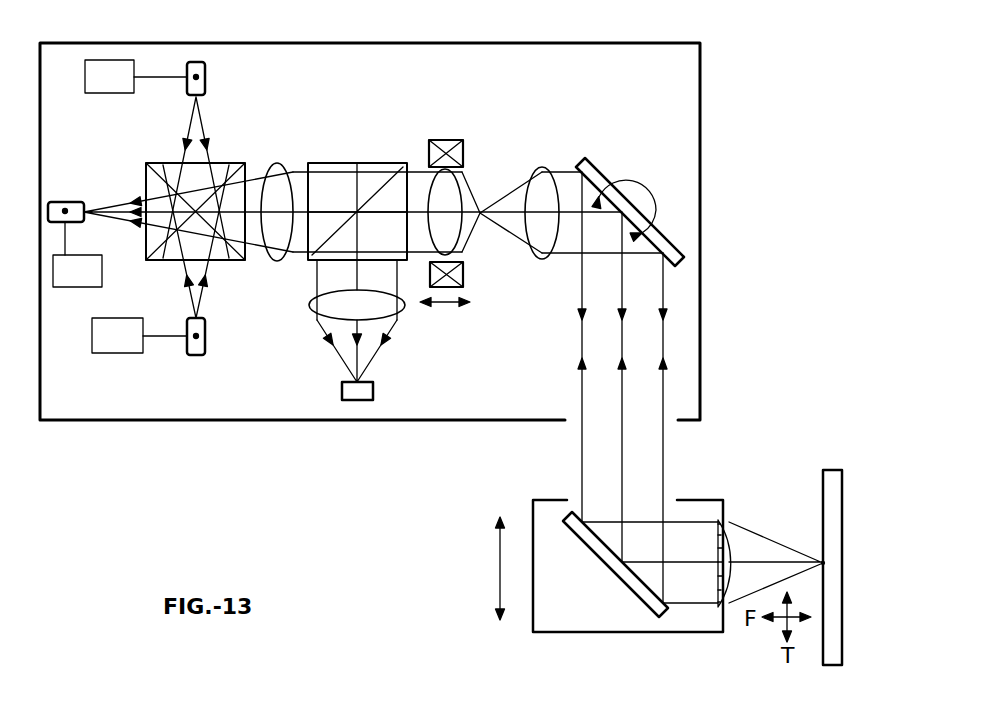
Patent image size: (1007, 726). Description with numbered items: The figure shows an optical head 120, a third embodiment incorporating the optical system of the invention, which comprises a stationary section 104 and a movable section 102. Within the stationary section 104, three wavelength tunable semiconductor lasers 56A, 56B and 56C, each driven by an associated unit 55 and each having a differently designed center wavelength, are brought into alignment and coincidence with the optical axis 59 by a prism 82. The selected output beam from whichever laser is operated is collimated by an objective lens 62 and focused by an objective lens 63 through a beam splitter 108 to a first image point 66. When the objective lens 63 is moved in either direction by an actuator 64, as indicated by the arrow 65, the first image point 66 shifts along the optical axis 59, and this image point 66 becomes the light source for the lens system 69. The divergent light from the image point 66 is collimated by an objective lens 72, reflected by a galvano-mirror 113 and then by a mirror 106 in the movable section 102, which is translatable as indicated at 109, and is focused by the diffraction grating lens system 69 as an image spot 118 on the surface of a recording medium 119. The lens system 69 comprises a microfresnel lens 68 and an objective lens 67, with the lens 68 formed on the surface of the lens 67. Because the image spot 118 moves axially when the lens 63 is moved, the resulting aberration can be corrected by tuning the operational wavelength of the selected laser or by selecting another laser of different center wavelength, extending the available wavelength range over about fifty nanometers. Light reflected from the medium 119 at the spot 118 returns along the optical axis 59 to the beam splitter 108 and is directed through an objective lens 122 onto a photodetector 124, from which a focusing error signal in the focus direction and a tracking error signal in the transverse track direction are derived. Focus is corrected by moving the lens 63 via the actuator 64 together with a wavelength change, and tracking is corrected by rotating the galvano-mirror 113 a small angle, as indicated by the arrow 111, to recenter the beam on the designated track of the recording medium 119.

The optical head 120 is at (694, 33).
The stationary section 104 is at (700, 153).
The laser driver / controller 55 is at (120, 206).
The wavelength tunable semiconductor laser 56A is at (70, 201).
The wavelength tunable semiconductor laser 56B is at (206, 77).
The wavelength tunable semiconductor laser 56C is at (196, 357).
The prism 82 is at (232, 162).
The objective lens 62 is at (277, 262).
The beam splitter 108 is at (357, 162).
The objective lens 122 is at (312, 305).
The photodetector 124 is at (352, 400).
The objective lens 63 is at (435, 180).
The actuator 64 is at (445, 139).
The first image point 66 is at (466, 270).
The arrow 65 is at (446, 306).
The optical axis 59 is at (484, 212).
The objective lens 72 is at (542, 165).
The galvano-mirror 113 is at (590, 157).
The arrow 111 is at (655, 182).
The movable section 102 is at (533, 633).
The carriage translation direction 109 is at (500, 575).
The mirror 106 is at (627, 596).
The microfresnel lens 68 is at (719, 608).
The objective lens 67 is at (728, 608).
The lens system 69 is at (748, 506).
The image spot 118 is at (822, 560).
The recording medium 119 is at (835, 469).